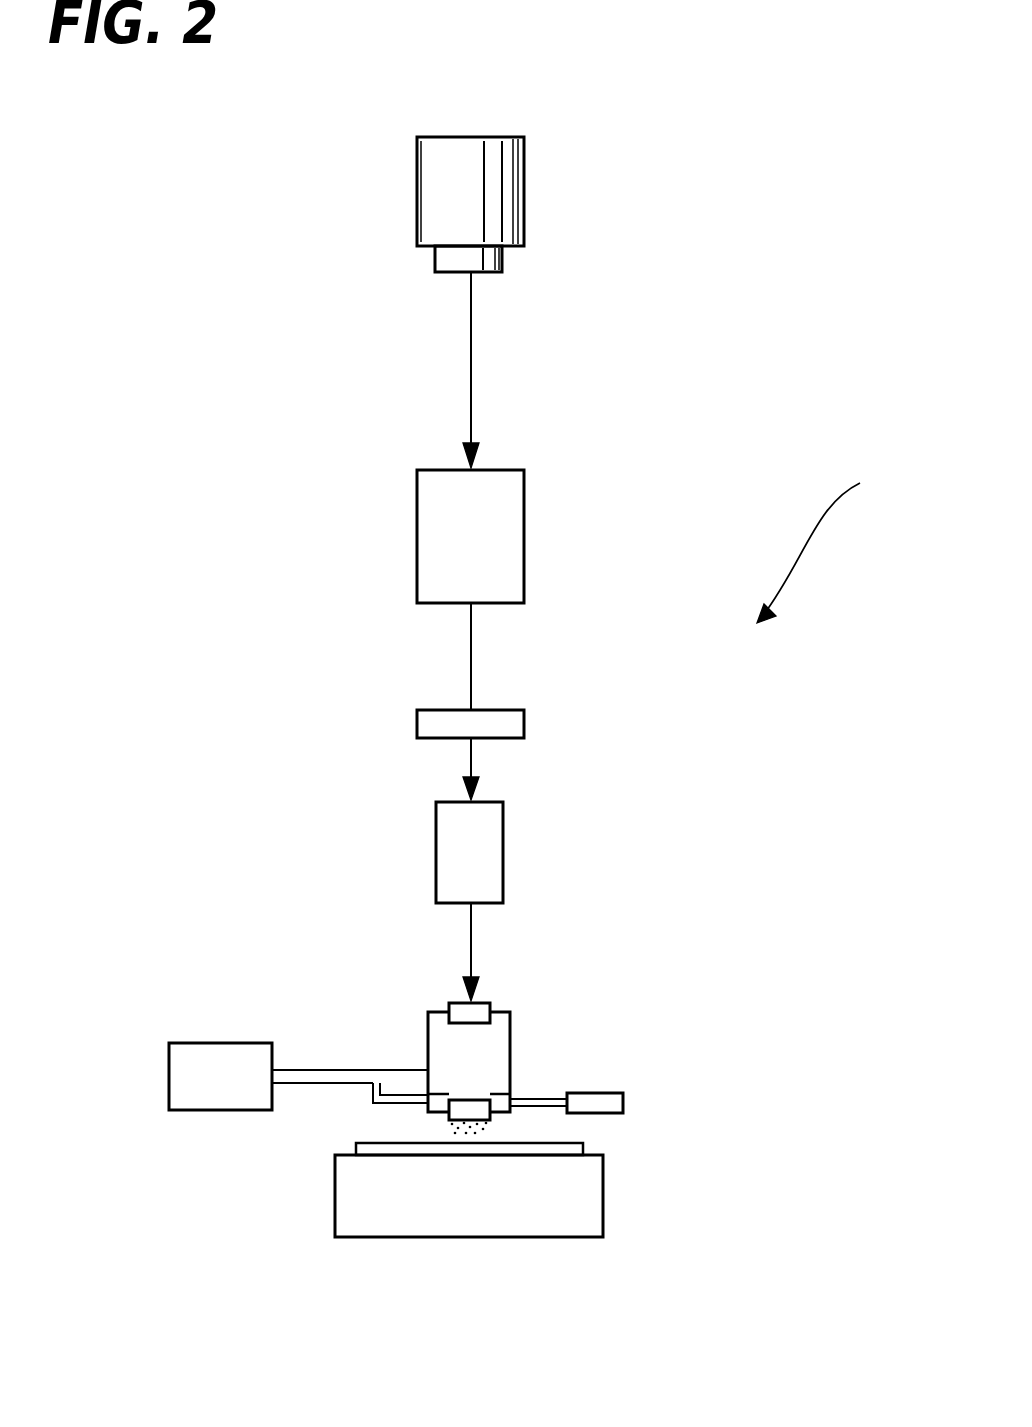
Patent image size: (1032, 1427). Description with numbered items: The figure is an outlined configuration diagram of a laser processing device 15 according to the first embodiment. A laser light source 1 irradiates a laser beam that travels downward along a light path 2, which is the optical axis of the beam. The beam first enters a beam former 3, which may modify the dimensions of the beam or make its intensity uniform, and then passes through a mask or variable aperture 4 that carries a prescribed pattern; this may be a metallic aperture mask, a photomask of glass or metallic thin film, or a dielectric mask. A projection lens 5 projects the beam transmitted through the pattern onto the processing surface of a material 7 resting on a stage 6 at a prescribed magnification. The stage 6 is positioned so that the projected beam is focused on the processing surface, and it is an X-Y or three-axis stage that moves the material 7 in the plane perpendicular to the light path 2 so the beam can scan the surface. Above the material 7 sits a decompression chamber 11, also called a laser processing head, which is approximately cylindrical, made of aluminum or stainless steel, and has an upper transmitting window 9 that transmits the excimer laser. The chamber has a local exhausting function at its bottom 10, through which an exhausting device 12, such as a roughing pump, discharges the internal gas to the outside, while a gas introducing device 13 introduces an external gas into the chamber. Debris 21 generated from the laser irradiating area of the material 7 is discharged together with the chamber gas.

The laser light source 1 is at (524, 181).
The light path 2 is at (471, 328).
The beam former 3 is at (524, 535).
The mask or variable aperture 4 is at (524, 727).
The projection lens 5 is at (503, 830).
The stage 6 is at (577, 1207).
The material 7 is at (570, 1149).
The upper transmitting window 9 is at (457, 1003).
The bottom 10 is at (453, 1123).
The decompression chamber 11 is at (510, 1023).
The exhausting device 12 is at (213, 1043).
The gas introducing device 13 is at (623, 1102).
The laser processing device 15 is at (915, 497).
The debris 21 is at (470, 1123).